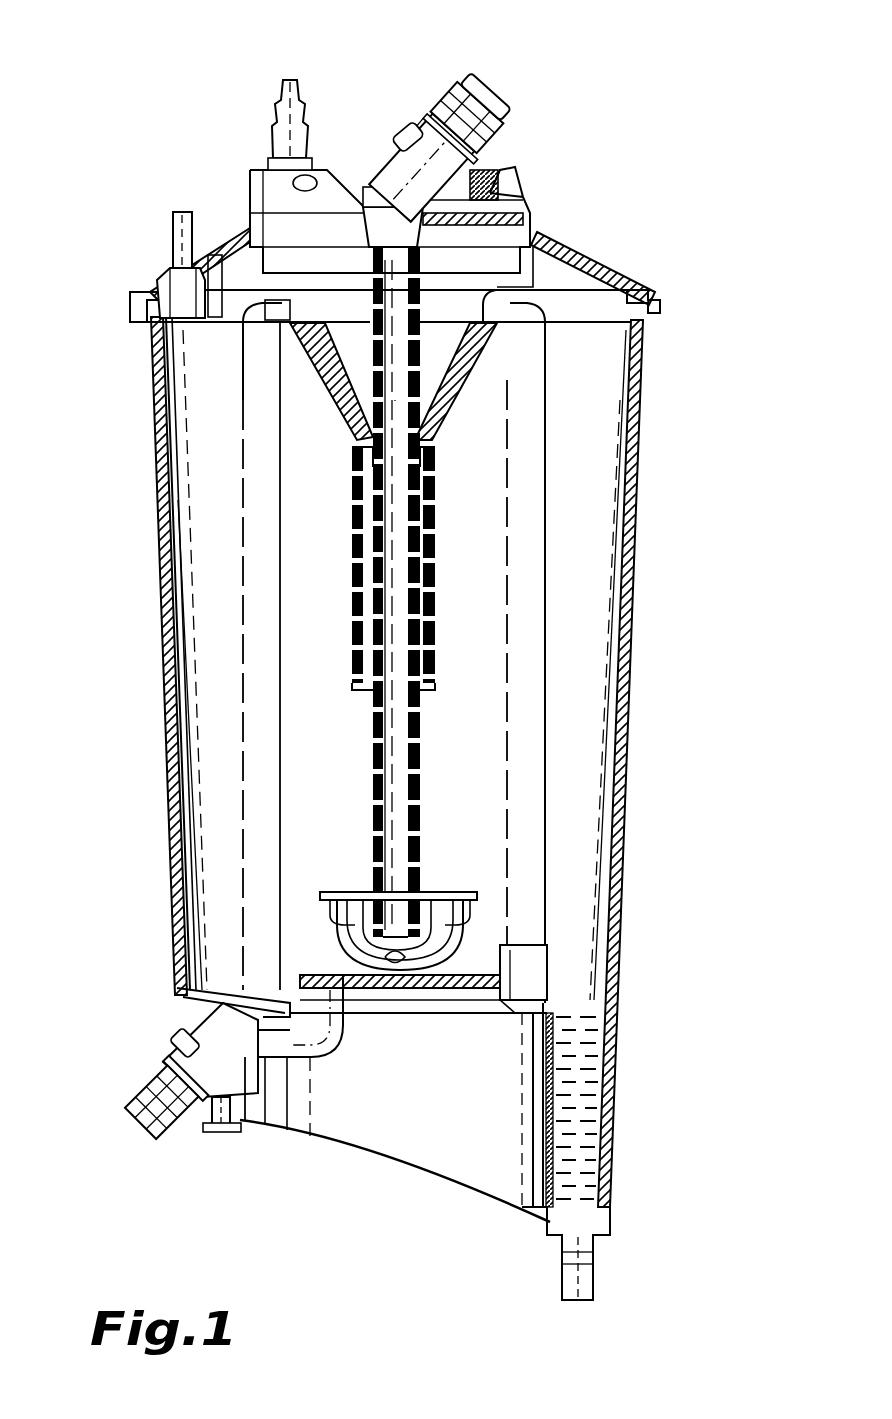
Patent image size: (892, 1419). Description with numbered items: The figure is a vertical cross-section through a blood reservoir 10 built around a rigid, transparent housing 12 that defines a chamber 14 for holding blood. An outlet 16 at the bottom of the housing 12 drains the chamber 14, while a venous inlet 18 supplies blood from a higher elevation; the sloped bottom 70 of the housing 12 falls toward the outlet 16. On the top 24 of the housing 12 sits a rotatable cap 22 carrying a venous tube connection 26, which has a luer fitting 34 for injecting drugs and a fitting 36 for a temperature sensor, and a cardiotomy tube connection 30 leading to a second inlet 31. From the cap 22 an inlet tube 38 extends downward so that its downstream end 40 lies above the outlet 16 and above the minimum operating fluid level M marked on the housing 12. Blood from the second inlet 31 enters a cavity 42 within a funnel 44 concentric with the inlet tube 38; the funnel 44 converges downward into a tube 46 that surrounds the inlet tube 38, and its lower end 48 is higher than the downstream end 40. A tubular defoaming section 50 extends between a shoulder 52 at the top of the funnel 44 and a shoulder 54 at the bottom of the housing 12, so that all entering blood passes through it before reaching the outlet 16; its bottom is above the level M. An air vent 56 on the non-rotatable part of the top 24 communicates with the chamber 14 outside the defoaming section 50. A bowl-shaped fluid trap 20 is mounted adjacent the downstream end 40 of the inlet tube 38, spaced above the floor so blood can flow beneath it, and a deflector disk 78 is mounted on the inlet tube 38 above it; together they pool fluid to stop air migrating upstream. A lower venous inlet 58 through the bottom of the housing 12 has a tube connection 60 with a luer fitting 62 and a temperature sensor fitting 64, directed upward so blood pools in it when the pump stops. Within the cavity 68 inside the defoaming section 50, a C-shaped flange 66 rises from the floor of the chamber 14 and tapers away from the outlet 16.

The blood reservoir 10 is at (628, 68).
The housing 12 is at (648, 682).
The chamber 14 is at (237, 638).
The outlet 16 is at (598, 1262).
The venous inlet 18 is at (428, 397).
The fluid trap 20 is at (458, 922).
The rotatable cap 22 is at (530, 197).
The top 24 is at (645, 288).
The venous tube connection 26 is at (481, 86).
The cardiotomy tube connection 30 is at (272, 97).
The second inlet 31 is at (312, 175).
The luer fitting 34 is at (400, 126).
The temperature sensor fitting 36 is at (498, 173).
The inlet tube 38 is at (412, 773).
The downstream end of inlet tube 40 is at (405, 905).
The cavity 42 is at (476, 368).
The funnel 44 is at (326, 400).
The tube 46 is at (352, 549).
The lower end of tube 48 is at (358, 687).
The defoaming section 50 is at (243, 540).
The shoulder 52 is at (285, 315).
The shoulder 54 is at (290, 988).
The air vent 56 is at (172, 235).
The lower venous inlet 58 is at (258, 1042).
The tube connection 60 is at (142, 1084).
The luer fitting 62 is at (178, 1033).
The temperature sensor fitting 64 is at (222, 1134).
The C-shaped flange 66 is at (512, 953).
The cavity 68 is at (333, 776).
The sloped bottom 70 is at (436, 1170).
The deflector disk 78 is at (352, 890).
The minimum operating fluid level M is at (608, 1008).